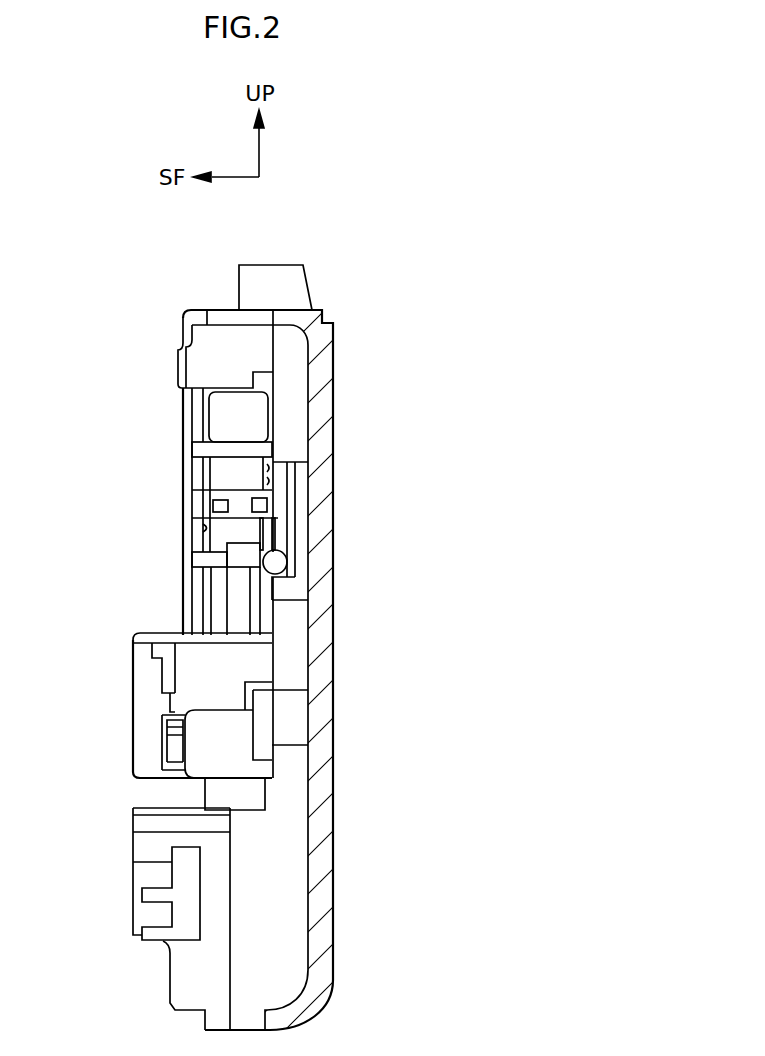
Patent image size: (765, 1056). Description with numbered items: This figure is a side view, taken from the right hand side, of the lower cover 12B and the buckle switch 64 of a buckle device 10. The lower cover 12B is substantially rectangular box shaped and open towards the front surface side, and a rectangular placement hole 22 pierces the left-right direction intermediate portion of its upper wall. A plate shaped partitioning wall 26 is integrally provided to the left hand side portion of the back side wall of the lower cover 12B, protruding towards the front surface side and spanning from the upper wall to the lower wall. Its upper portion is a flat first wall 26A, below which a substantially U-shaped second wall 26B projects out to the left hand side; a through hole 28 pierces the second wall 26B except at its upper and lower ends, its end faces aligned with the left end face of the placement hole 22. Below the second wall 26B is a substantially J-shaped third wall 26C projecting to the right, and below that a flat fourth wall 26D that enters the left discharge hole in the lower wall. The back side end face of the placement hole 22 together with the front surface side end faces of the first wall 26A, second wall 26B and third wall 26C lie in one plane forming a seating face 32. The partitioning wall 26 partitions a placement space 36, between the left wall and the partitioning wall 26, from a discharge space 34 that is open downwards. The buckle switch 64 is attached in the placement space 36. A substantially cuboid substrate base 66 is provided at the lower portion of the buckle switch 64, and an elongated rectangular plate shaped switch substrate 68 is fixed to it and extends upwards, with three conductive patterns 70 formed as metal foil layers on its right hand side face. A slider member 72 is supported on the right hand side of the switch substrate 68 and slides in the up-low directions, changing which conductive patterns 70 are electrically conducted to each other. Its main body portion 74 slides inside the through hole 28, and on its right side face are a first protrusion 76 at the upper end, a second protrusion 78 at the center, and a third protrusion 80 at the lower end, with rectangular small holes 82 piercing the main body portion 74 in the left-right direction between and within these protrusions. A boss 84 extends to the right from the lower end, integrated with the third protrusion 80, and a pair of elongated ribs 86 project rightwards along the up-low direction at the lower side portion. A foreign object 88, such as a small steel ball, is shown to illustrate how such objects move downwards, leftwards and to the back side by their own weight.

The buckle device 10 is at (119, 283).
The lower cover 12B is at (338, 319).
The placement hole 22 is at (220, 318).
The partitioning wall 26 is at (273, 349).
The first wall 26A is at (303, 370).
The second wall 26B is at (298, 592).
The third wall 26C is at (292, 663).
The fourth wall 26D is at (288, 927).
The through hole 28 is at (283, 478).
The seating face 32 is at (258, 303).
The discharge space 34 is at (303, 803).
The placement space 36 is at (185, 406).
The buckle switch 64 is at (131, 744).
The substrate base 66 is at (133, 688).
The switch substrate 68 is at (202, 626).
The conductive patterns 70 is at (191, 416).
The slider member 72 is at (187, 472).
The main body portion 74 is at (192, 553).
The first protrusion 76 is at (192, 447).
The second protrusion 78 is at (190, 506).
The third protrusion 80 is at (227, 578).
The small holes 82 is at (207, 527).
The boss 84 is at (287, 558).
The ribs 86 is at (262, 540).
The foreign object 88 is at (293, 572).